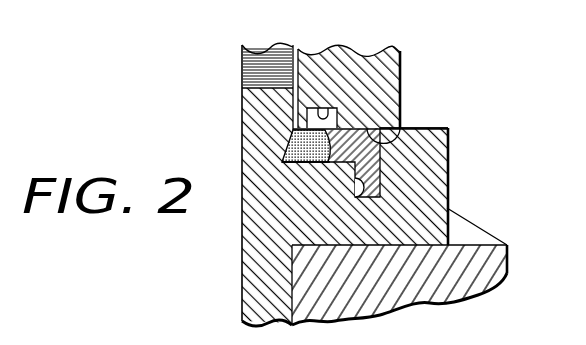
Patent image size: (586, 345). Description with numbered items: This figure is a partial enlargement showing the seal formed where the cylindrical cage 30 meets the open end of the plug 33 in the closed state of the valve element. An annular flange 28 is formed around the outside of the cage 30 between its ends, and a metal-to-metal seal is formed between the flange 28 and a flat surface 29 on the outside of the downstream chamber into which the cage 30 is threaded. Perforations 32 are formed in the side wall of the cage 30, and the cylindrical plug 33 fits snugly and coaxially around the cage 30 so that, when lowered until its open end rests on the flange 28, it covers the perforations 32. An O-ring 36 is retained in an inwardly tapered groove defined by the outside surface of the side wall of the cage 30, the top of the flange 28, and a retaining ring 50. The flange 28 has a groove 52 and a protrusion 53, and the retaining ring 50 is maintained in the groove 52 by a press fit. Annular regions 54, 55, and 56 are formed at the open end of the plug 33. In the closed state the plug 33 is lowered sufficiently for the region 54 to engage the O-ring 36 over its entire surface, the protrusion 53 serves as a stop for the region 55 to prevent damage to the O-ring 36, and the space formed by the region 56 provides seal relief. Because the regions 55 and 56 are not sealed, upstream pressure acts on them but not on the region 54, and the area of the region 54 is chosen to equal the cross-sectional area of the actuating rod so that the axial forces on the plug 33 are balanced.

The annular flange 28 is at (450, 148).
The flat surface 29 is at (458, 244).
The cage 30 is at (242, 283).
The perforations 32 is at (265, 88).
The plug 33 is at (348, 61).
The O-ring 36 is at (283, 138).
The retaining ring 50 is at (380, 163).
The groove 52 is at (360, 197).
The protrusion 53 is at (430, 128).
The annular region 54 is at (308, 163).
The annular region 55 is at (400, 128).
The annular region 56 is at (320, 115).